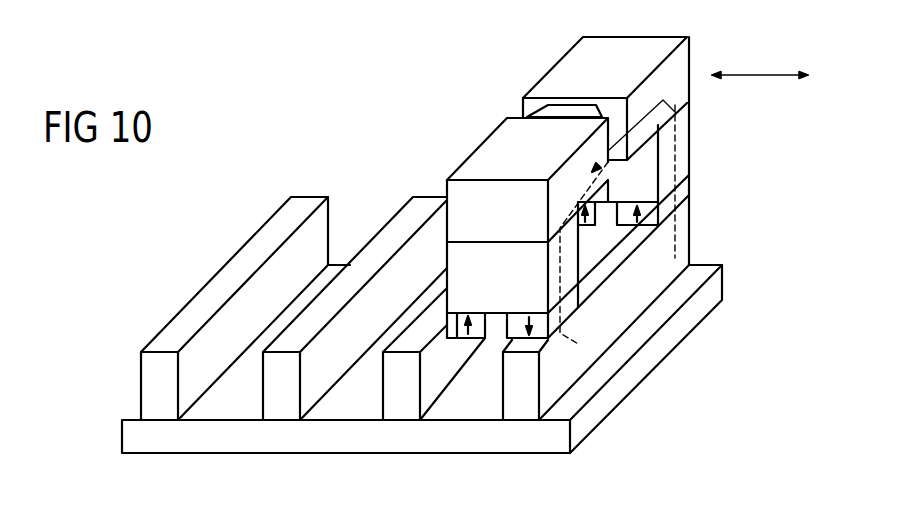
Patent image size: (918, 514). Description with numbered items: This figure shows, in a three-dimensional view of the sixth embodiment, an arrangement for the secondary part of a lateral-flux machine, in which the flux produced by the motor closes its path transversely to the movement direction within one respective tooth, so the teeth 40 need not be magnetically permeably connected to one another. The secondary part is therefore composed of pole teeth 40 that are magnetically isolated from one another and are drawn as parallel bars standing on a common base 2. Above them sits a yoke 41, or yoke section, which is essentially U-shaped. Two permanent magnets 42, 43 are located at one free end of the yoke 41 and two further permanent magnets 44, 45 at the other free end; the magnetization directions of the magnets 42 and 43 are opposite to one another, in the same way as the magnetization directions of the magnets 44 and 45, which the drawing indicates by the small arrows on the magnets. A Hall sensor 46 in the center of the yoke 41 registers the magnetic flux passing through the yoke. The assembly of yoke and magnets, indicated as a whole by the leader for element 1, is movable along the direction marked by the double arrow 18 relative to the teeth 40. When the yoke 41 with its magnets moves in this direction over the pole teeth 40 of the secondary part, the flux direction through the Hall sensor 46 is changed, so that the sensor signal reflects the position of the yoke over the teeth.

The gate electrode / upper gate block 1 is at (536, 67).
The substrate 2 is at (204, 268).
The direction of gate length 18 is at (760, 73).
The teeth 40 is at (165, 397).
The yoke 41 is at (470, 187).
The permanent magnet 42 is at (452, 338).
The permanent magnet 43 is at (517, 338).
The permanent magnet 44 is at (592, 226).
The permanent magnet 45 is at (637, 214).
The Hall sensor 46 is at (530, 112).